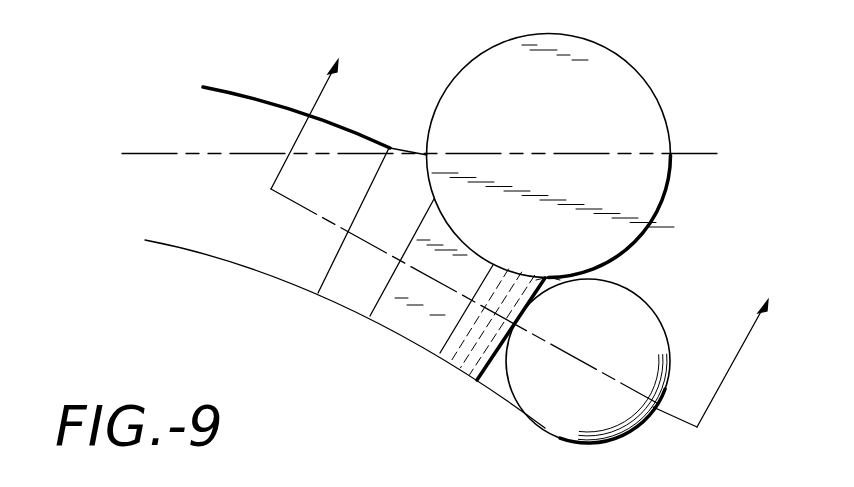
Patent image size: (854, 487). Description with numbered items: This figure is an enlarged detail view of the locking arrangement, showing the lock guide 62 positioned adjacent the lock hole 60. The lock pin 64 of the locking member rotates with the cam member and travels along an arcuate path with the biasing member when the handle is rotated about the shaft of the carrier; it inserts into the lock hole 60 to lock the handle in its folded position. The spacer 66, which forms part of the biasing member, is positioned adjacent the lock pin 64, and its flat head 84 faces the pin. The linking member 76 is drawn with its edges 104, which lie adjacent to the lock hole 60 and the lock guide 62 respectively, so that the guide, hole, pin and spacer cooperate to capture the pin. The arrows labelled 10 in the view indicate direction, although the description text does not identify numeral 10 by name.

The direction of travel arrow 10 is at (530, 231).
The lock hole 60 is at (611, 271).
The lock guide 62 is at (267, 117).
The lock pin 64 is at (643, 323).
The spacer 66 is at (593, 53).
The linking member 76 is at (423, 327).
The head 84 is at (647, 103).
The edges 104 is at (318, 293).